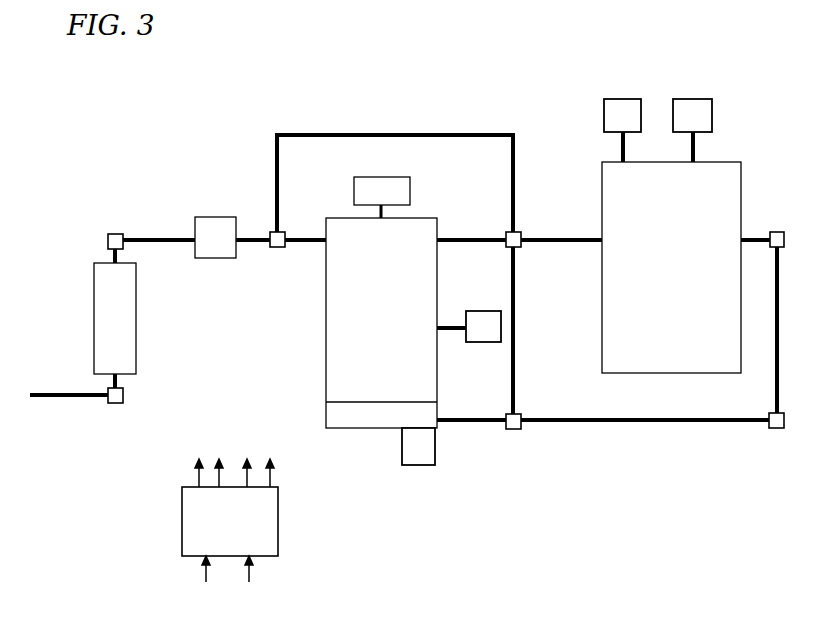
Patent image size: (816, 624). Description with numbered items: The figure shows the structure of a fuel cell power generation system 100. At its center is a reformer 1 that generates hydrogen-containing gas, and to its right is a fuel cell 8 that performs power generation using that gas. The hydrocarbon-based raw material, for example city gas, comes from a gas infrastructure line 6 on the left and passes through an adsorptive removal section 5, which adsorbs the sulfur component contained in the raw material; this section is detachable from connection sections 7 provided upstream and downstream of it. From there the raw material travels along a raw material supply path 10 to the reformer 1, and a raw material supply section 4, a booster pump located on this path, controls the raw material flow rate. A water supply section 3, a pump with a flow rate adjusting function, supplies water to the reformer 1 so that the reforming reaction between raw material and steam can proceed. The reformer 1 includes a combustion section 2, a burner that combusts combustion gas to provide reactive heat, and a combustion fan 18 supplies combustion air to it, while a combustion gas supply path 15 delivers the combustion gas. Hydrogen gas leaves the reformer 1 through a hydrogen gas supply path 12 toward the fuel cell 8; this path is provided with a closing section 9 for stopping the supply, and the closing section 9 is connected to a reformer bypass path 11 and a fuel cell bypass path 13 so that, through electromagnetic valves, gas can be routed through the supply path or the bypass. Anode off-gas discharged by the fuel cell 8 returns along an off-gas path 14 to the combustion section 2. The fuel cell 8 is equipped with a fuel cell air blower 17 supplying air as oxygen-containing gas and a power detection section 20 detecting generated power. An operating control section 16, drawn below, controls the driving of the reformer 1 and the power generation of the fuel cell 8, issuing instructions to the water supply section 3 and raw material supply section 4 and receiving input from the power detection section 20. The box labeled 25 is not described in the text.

The reformer 1 is at (428, 237).
The combustion section 2 is at (348, 420).
The water supply section 3 is at (400, 190).
The raw material supply section 4 is at (210, 223).
The adsorptive removal section 5 is at (120, 293).
The gas infrastructure line 6 is at (57, 398).
The connection section 7 is at (113, 238).
The fuel cell 8 is at (725, 182).
The closing section 9 is at (515, 235).
The raw material supply path 10 is at (305, 242).
The reformer bypass path 11 is at (367, 133).
The hydrogen gas supply path 12 is at (580, 245).
The fuel cell bypass path 13 is at (515, 352).
The off-gas path 14 is at (648, 422).
The combustion gas supply path 15 is at (468, 423).
The operating control section 16 is at (194, 542).
The fuel cell air blower 17 is at (613, 109).
The combustion fan 18 is at (420, 457).
The power detection section 20 is at (688, 113).
The level sensor 25 is at (480, 332).
The fuel cell power generation system 100 is at (727, 93).